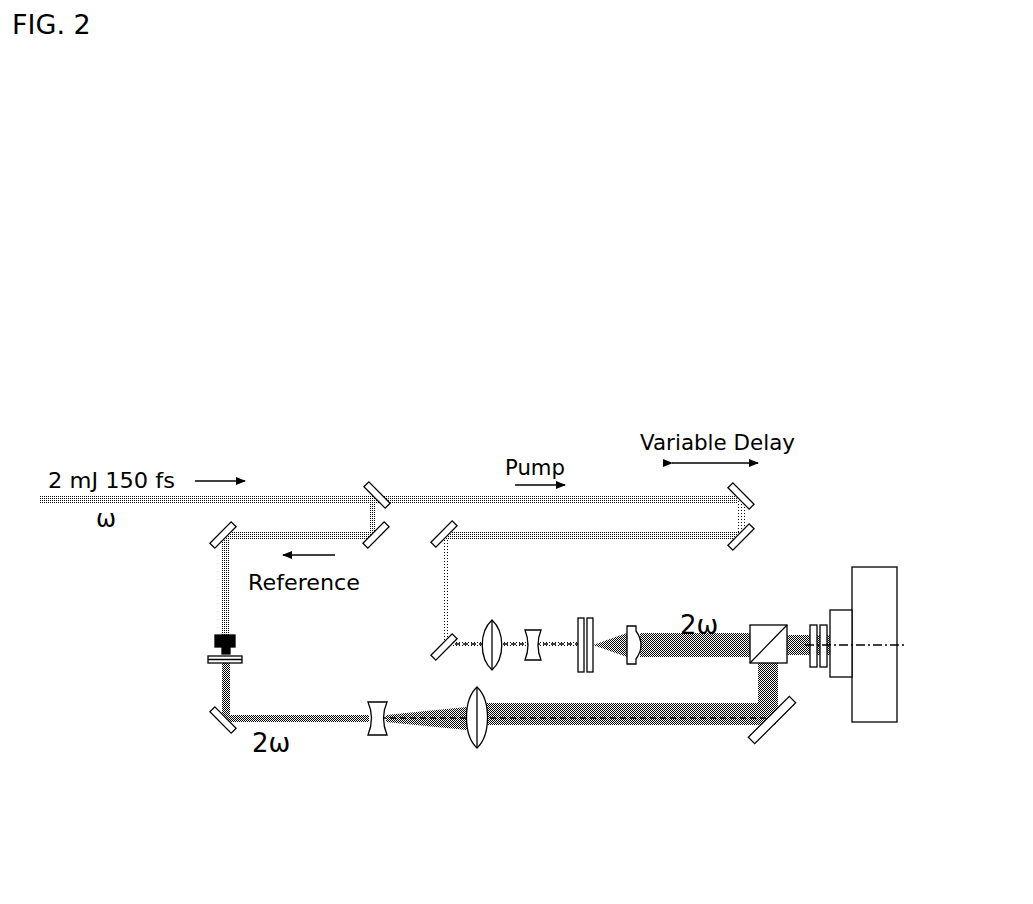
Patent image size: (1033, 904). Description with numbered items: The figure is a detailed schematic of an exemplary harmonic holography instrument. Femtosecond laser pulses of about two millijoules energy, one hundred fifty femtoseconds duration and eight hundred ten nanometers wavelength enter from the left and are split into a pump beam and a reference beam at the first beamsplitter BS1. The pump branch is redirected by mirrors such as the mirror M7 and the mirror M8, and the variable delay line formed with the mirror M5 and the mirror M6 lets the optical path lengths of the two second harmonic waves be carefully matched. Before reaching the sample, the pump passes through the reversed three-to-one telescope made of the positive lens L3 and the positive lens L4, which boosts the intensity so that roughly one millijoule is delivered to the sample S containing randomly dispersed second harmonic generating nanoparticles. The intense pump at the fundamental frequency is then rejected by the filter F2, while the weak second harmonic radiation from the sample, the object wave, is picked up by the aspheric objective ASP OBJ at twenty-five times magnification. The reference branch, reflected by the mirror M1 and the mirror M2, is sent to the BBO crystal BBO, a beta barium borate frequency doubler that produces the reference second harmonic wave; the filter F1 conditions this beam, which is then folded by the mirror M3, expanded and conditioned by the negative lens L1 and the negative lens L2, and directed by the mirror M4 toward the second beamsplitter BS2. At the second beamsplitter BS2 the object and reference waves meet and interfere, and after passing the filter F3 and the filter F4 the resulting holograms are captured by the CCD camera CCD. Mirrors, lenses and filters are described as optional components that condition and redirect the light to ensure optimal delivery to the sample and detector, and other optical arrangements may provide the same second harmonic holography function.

The first beamsplitter BS1 is at (371, 485).
The second beamsplitter BS2 is at (769, 630).
The mirror M1 is at (383, 546).
The mirror M2 is at (207, 533).
The mirror M3 is at (210, 729).
The mirror M4 is at (781, 724).
The mirror M5 is at (756, 493).
The mirror M6 is at (756, 543).
The mirror M7 is at (432, 532).
The mirror M8 is at (432, 652).
The negative lens L1 is at (380, 742).
The negative lens L2 is at (476, 734).
The positive lens L3 is at (493, 634).
The positive lens L4 is at (533, 629).
The sample S is at (580, 618).
The filter F1 is at (240, 660).
The filter F2 is at (592, 618).
The filter F3 is at (811, 623).
The filter F4 is at (823, 623).
The BBO crystal BBO is at (255, 639).
The aspheric objective ASP OBJ is at (646, 662).
The CCD camera CCD is at (856, 660).